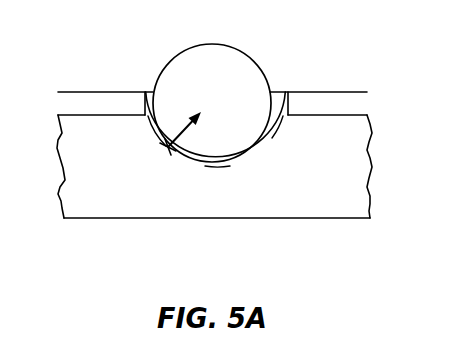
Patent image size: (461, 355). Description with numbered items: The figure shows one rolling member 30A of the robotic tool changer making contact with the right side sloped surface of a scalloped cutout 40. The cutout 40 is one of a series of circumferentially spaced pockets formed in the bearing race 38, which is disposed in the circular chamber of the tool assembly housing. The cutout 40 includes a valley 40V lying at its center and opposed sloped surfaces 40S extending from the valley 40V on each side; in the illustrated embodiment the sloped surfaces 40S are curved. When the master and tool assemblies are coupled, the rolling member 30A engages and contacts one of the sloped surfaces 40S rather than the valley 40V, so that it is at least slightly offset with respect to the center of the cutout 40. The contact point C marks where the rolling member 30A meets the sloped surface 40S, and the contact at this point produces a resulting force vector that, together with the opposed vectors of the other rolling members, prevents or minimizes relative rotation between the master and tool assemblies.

The rolling member 30A is at (238, 94).
The bearing race 38 is at (272, 200).
The scalloped cutout 40 is at (286, 93).
The sloped surface 40S is at (152, 118).
The valley 40V is at (217, 168).
The contact point C is at (168, 147).